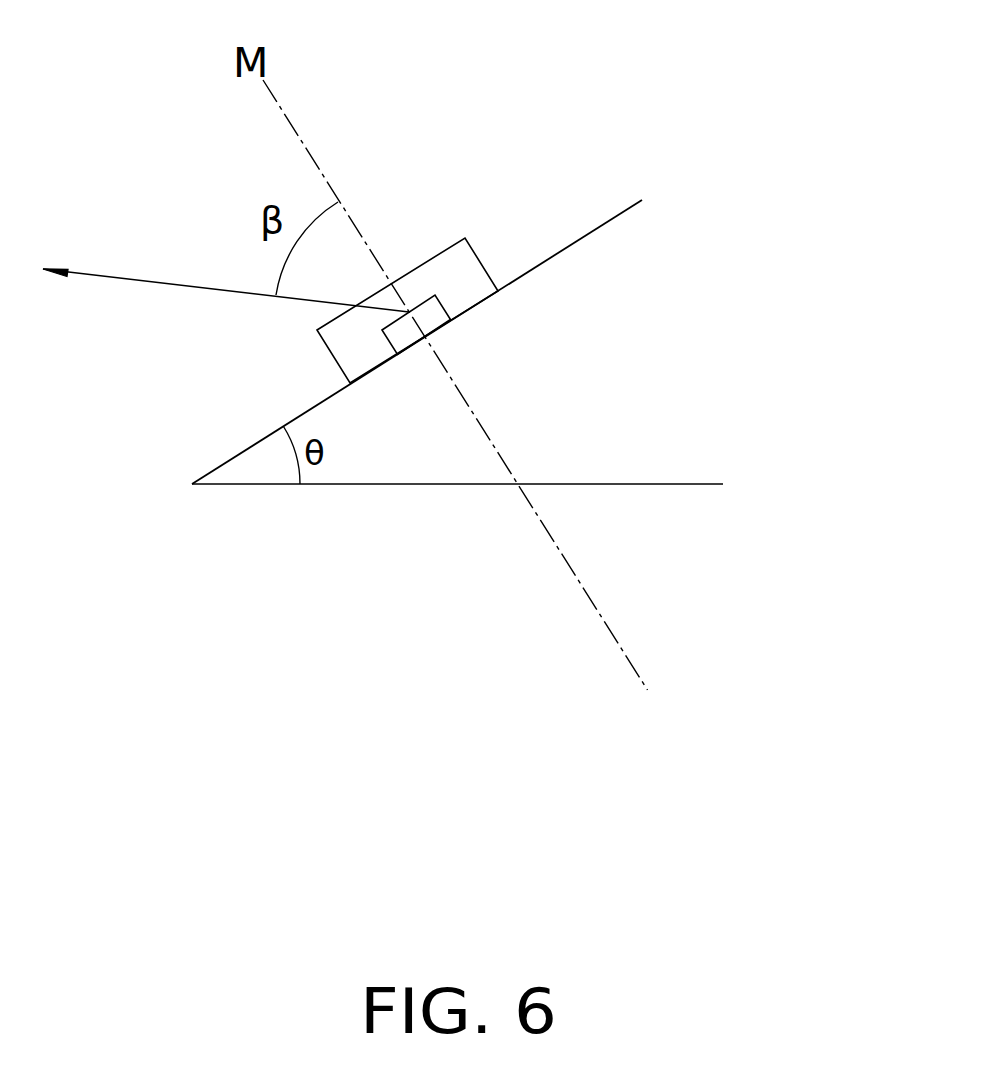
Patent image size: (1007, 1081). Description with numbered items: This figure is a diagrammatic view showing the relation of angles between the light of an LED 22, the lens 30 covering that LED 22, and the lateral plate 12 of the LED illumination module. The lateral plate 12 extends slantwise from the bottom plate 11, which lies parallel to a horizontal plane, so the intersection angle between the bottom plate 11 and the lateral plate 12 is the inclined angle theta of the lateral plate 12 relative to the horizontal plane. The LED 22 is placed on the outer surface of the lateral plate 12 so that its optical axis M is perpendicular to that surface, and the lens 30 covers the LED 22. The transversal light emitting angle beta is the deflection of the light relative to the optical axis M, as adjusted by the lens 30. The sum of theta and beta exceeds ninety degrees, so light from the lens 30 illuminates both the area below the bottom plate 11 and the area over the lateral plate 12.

The bottom plate 11 is at (642, 484).
The lateral plate 12 is at (590, 232).
The LED 22 is at (398, 337).
The lens 30 is at (437, 256).